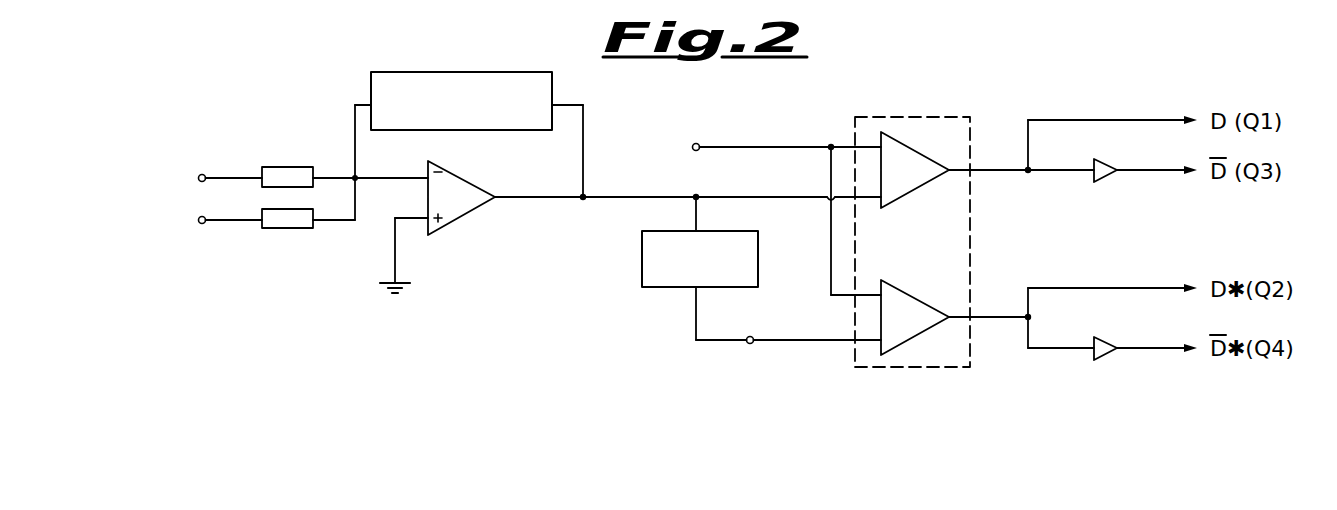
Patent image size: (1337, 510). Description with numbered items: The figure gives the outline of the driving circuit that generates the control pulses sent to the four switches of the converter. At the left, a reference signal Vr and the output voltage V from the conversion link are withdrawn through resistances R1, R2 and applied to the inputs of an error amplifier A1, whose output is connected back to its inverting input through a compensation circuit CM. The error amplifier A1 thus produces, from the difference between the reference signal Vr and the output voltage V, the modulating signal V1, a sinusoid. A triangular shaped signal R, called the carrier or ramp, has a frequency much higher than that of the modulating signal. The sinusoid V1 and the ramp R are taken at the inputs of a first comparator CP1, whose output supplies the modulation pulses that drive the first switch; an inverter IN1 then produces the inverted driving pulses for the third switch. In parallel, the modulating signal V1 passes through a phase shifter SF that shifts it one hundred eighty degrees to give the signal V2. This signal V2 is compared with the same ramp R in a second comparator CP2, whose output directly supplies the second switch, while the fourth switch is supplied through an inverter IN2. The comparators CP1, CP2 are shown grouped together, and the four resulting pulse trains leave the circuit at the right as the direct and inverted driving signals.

The resistance R1 is at (292, 167).
The resistance R2 is at (300, 229).
The error amplifier A1 is at (461, 198).
The compensation circuit CM is at (463, 72).
The phase shifter SF is at (758, 251).
The first comparator CP1 is at (915, 170).
The second comparator CP2 is at (915, 317).
The inverter IN1 is at (1114, 185).
The inverter IN2 is at (1117, 337).
The reference signal Vr is at (215, 178).
The output voltage V is at (220, 220).
The modulating signal V1 is at (572, 212).
The phase-shifted signal V2 is at (752, 356).
The carrier R is at (691, 134).